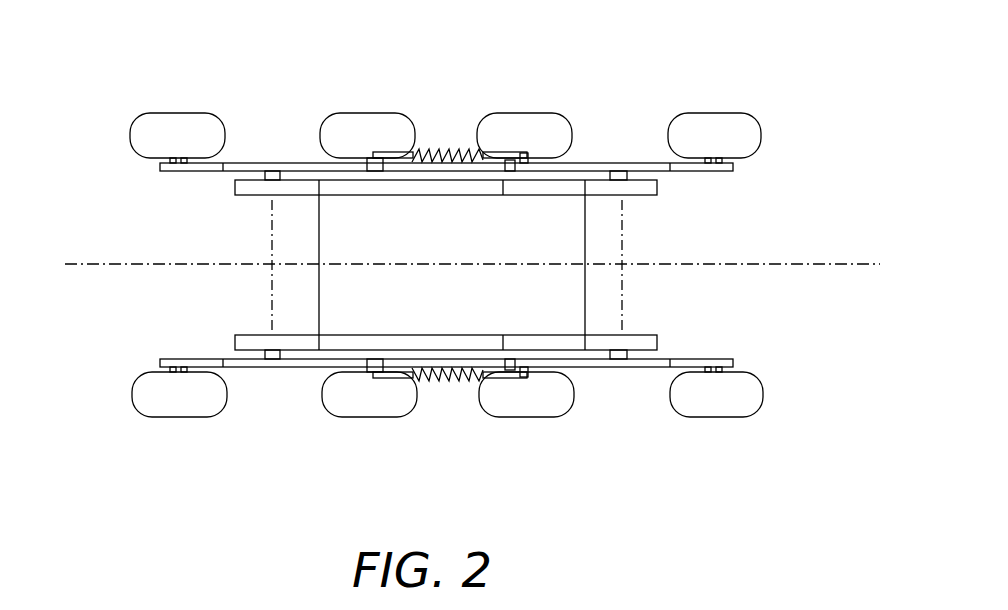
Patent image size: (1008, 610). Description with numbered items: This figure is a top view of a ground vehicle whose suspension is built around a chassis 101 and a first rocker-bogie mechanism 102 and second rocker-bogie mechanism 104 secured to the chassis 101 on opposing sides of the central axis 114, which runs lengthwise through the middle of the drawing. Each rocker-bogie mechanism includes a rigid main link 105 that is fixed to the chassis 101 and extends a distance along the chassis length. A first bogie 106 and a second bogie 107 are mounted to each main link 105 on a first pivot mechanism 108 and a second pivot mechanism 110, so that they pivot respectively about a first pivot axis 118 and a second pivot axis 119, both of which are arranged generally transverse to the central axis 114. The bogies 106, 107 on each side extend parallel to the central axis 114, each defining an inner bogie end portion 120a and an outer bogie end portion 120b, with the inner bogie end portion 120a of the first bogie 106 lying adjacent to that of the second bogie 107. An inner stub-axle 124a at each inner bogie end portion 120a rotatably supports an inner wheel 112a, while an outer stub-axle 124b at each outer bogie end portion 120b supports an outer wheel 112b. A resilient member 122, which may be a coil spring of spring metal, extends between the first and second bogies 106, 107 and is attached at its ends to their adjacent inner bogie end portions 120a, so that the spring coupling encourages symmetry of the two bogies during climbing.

The chassis 101 is at (478, 245).
The first rocker-bogie mechanism 102 is at (509, 60).
The second rocker-bogie mechanism 104 is at (462, 486).
The main link 105 is at (505, 196).
The first bogie 106 is at (210, 172).
The second bogie 107 is at (680, 172).
The first pivot mechanism 108 is at (270, 171).
The second pivot mechanism 110 is at (620, 171).
The inner wheel 112a is at (362, 113).
The outer wheel 112b is at (178, 113).
The central axis 114 is at (793, 264).
The first pivot axis 118 is at (272, 233).
The second pivot axis 119 is at (628, 238).
The inner bogie end portion 120a is at (505, 170).
The outer bogie end portion 120b is at (160, 165).
The resilient member 122 is at (445, 147).
The inner stub-axle 124a is at (370, 172).
The outer stub-axle 124b is at (178, 163).